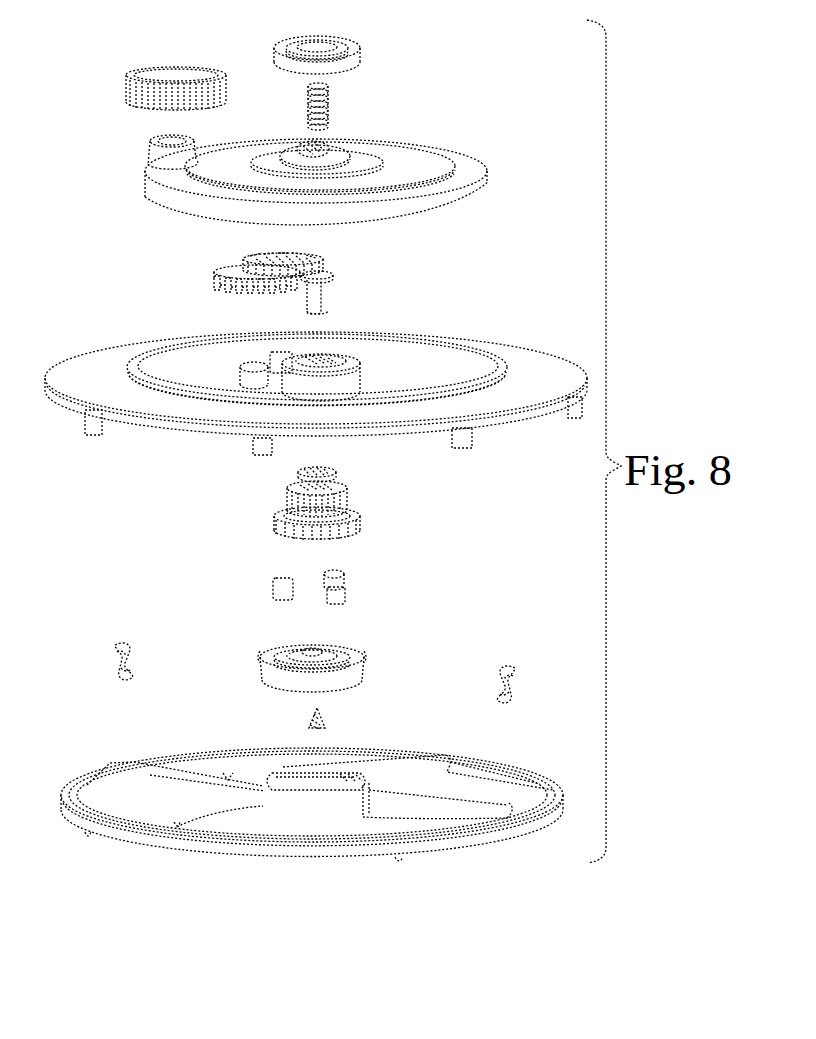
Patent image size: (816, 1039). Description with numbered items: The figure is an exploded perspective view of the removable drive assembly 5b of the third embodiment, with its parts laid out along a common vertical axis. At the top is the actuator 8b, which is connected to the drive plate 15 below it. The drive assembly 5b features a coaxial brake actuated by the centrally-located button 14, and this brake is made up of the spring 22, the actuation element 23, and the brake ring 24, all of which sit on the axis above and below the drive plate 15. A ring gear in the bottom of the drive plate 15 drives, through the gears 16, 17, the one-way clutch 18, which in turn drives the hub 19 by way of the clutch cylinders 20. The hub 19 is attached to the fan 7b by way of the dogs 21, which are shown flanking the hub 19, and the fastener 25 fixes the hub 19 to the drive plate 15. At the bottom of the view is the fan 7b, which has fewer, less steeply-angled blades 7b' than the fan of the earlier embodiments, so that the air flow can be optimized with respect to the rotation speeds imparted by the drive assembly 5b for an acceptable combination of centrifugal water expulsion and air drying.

The button 14 is at (362, 48).
The actuator 8b is at (124, 92).
The spring 22 is at (330, 101).
The drive plate 15 is at (471, 167).
The gear 16 is at (213, 281).
The actuation element 23 is at (329, 297).
The drive assembly 5b is at (97, 528).
The brake ring 24 is at (338, 470).
The gear 17 is at (350, 498).
The one-way clutch 18 is at (345, 537).
The clutch cylinder 20 is at (348, 594).
The dog 21 is at (534, 696).
The hub 19 is at (346, 681).
The fastener 25 is at (328, 718).
The fan 7b is at (312, 827).
The blade 7b' is at (164, 785).